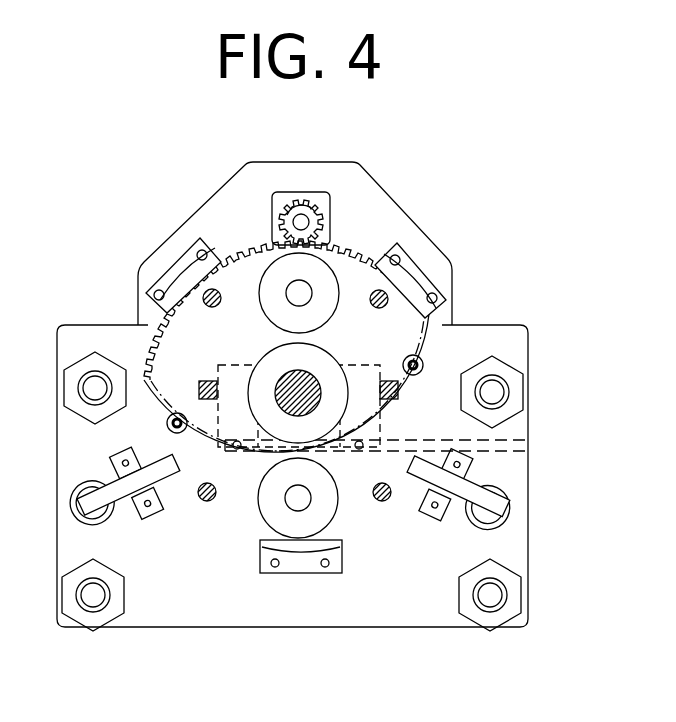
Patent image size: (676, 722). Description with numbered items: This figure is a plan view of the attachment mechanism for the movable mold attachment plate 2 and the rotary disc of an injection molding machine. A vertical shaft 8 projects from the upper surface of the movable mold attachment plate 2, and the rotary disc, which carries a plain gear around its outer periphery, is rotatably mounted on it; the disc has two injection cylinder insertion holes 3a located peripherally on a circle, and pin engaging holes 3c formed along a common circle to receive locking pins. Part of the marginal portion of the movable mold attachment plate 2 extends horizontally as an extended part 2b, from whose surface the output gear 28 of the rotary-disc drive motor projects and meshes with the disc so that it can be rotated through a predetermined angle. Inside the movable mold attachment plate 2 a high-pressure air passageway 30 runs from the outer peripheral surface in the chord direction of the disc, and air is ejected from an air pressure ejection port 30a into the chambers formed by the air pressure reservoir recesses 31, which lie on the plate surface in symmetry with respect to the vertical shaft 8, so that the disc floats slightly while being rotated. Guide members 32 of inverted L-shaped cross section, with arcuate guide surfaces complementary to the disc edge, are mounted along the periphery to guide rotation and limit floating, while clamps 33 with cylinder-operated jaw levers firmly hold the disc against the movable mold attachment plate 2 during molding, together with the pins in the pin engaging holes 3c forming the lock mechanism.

The movable mold attachment plate 2 is at (187, 607).
The extended part 2b is at (372, 200).
The output gear 28 is at (301, 208).
The guide member 32 is at (170, 277).
The injection cylinder insertion hole 3a is at (278, 278).
The pin engaging hole 3c is at (178, 413).
The vertical shaft 8 is at (292, 385).
The air pressure reservoir recess 31 is at (236, 365).
The high-pressure air passageway 30 is at (502, 451).
The air pressure ejection port 30a is at (234, 448).
The clamp 33 is at (130, 512).